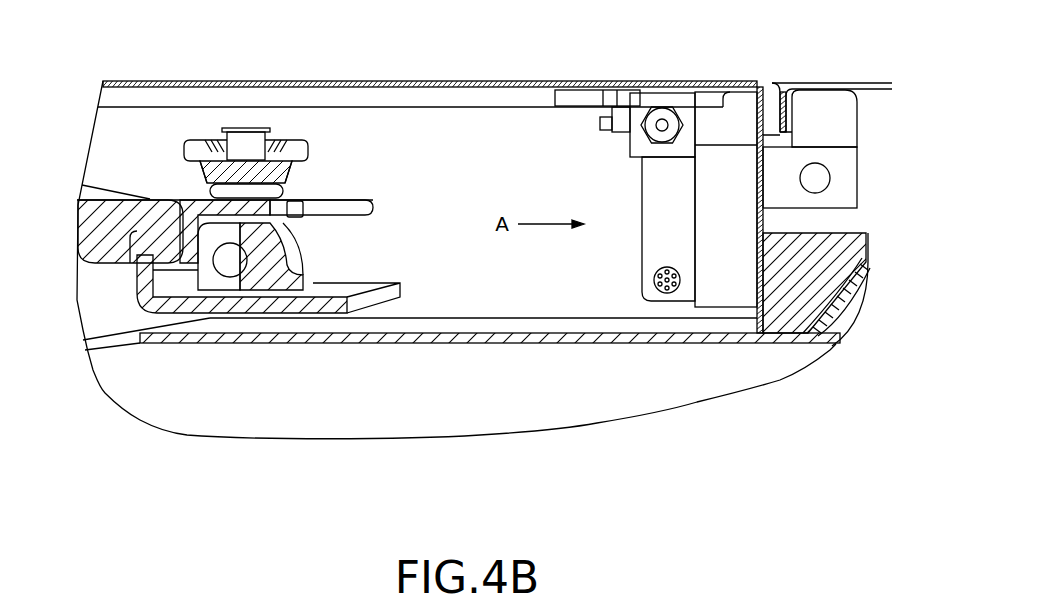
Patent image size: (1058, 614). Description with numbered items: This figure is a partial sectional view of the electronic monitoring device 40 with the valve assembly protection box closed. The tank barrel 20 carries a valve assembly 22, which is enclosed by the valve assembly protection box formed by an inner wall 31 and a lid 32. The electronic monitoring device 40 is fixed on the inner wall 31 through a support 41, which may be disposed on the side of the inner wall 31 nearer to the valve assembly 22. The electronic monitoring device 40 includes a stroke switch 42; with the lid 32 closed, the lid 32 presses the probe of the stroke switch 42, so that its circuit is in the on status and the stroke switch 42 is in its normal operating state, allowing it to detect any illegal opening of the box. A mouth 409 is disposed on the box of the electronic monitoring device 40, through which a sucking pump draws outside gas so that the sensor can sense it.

The tank barrel 20 is at (570, 412).
The valve assembly 22 is at (244, 139).
The inner wall 31 is at (761, 104).
The lid 32 is at (393, 82).
The electronic monitoring device 40 is at (658, 187).
The support 41 is at (724, 307).
The stroke switch 42 is at (661, 94).
The mouth 409 is at (653, 281).